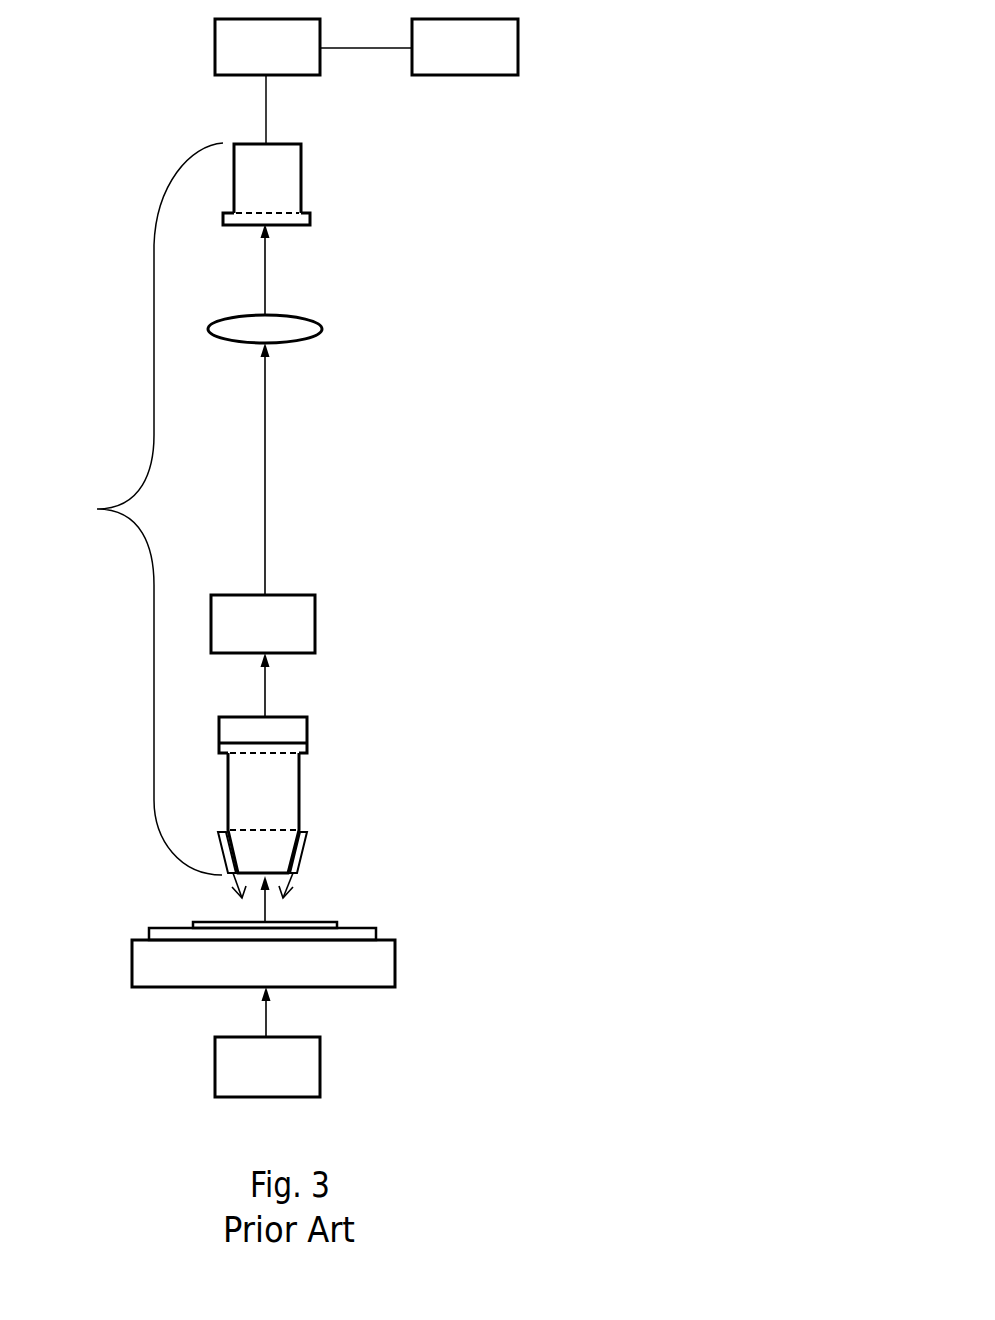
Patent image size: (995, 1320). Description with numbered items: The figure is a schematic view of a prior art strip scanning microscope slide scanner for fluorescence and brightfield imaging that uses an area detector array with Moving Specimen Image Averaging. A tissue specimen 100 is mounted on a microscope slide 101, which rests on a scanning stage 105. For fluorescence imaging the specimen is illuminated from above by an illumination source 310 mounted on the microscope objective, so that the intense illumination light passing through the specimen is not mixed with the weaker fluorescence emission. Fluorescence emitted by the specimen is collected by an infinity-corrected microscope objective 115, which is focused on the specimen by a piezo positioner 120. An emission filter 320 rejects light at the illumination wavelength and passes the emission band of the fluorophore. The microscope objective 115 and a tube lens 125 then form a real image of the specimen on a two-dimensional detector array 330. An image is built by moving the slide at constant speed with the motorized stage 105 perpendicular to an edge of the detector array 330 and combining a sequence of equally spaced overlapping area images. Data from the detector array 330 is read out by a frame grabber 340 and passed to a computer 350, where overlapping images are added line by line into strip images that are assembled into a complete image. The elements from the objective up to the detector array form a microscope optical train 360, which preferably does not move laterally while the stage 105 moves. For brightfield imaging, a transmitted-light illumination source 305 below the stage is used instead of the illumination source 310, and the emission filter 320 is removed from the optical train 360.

The frame grabber 340 is at (215, 49).
The computer 350 is at (518, 48).
The two-dimensional detector array 330 is at (301, 180).
The tube lens 125 is at (322, 329).
The emission filter 320 is at (315, 628).
The microscope optical train 360 is at (97, 509).
The piezo positioner 120 is at (307, 729).
The infinity-corrected microscope objective 115 is at (300, 792).
The illumination source 310 is at (305, 857).
The tissue specimen 100 is at (337, 923).
The microscope slide 101 is at (376, 933).
The scanning stage 105 is at (395, 963).
The transmitted-light illumination source 305 is at (320, 1065).